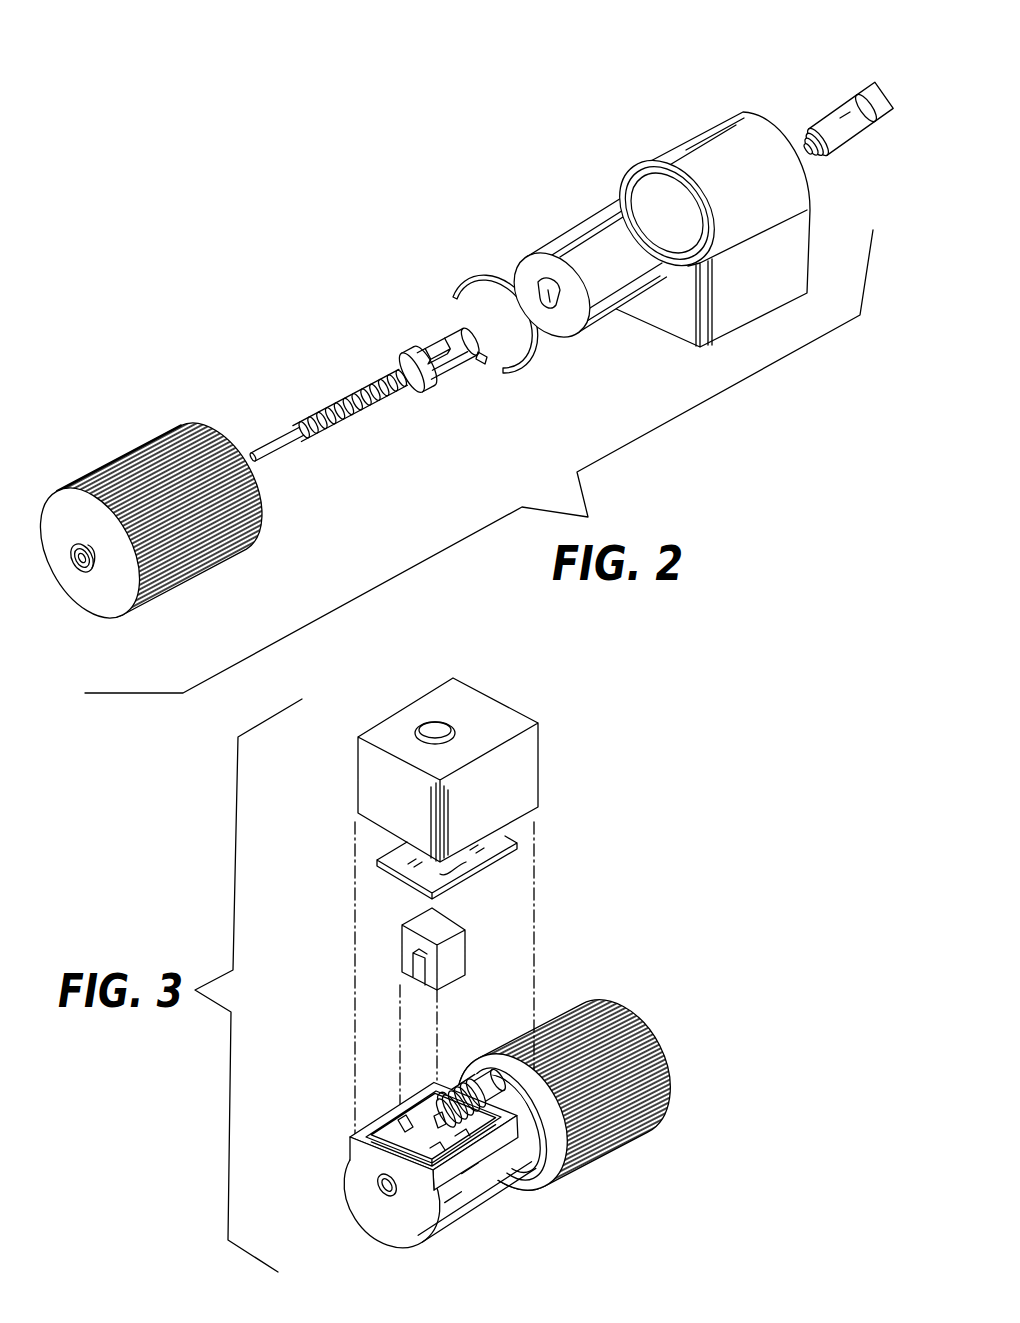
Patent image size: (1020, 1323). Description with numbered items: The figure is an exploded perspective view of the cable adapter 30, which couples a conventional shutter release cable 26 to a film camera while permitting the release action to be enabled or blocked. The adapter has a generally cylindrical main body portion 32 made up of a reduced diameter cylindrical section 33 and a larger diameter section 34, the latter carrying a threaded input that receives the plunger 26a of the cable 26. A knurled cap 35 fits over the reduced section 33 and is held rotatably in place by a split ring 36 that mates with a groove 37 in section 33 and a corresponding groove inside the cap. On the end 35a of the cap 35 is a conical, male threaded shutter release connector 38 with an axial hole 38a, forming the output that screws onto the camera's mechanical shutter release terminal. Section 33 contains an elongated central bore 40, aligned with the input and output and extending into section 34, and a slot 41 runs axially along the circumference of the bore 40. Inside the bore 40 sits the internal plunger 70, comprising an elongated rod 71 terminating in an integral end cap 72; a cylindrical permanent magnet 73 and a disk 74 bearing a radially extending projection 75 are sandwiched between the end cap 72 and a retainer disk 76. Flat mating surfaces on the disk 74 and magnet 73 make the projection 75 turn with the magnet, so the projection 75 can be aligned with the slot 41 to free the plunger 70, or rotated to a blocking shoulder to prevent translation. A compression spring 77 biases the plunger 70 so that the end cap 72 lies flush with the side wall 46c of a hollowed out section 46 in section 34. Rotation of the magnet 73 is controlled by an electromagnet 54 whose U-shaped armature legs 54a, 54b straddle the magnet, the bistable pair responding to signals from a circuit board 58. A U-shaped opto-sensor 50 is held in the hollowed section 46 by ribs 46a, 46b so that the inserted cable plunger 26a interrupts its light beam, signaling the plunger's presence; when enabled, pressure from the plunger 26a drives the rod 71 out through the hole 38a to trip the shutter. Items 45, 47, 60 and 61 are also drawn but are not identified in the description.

In FIG. 2, the shutter release cable 26 is at (820, 84).
In FIG. 2, the plunger 26a is at (789, 101).
In FIG. 3, the cable adapter 30 is at (510, 967).
In FIG. 2, the main body portion 32 is at (645, 225).
In FIG. 2, the reduced diameter cylindrical section 33 is at (573, 279).
In FIG. 2, the larger diameter section 34 is at (685, 138).
In FIG. 3, the larger diameter section 34 is at (400, 1135).
In FIG. 2, the knurled cap 35 is at (141, 520).
In FIG. 3, the knurled cap 35 is at (627, 1130).
In FIG. 2, the end of cap 35a is at (55, 515).
In FIG. 2, the split ring 36 is at (477, 275).
In FIG. 2, the groove 37 is at (684, 282).
In FIG. 2, the shutter release connector 38 is at (103, 570).
In FIG. 2, the axial hole 38a is at (73, 567).
In FIG. 2, the central bore 40 is at (532, 280).
In FIG. 2, the slot 41 is at (550, 333).
In FIG. 3, the boss 45 is at (400, 1122).
In FIG. 3, the hollowed out section 46 is at (420, 1156).
In FIG. 3, the rib 46a is at (405, 1125).
In FIG. 3, the rib 46b is at (437, 1147).
In FIG. 3, the side wall 46c is at (460, 1140).
In FIG. 3, the screw hole 47 is at (380, 1192).
In FIG. 3, the opto-sensor 50 is at (405, 940).
In FIG. 3, the electromagnet 54 is at (471, 1053).
In FIG. 3, the armature leg 54a is at (443, 1093).
In FIG. 3, the armature leg 54b is at (542, 1097).
In FIG. 3, the circuit board 58 is at (512, 838).
In FIG. 3, the cap block 60 is at (480, 751).
In FIG. 3, the cap opening 61 is at (440, 720).
In FIG. 2, the internal plunger 70 is at (359, 397).
In FIG. 2, the rod 71 is at (262, 437).
In FIG. 2, the end cap 72 is at (453, 316).
In FIG. 3, the end cap 72 is at (440, 1120).
In FIG. 2, the permanent magnet 73 is at (418, 360).
In FIG. 2, the disk 74 is at (420, 332).
In FIG. 2, the projection 75 is at (443, 328).
In FIG. 2, the retainer disk 76 is at (440, 378).
In FIG. 2, the compression spring 77 is at (357, 415).